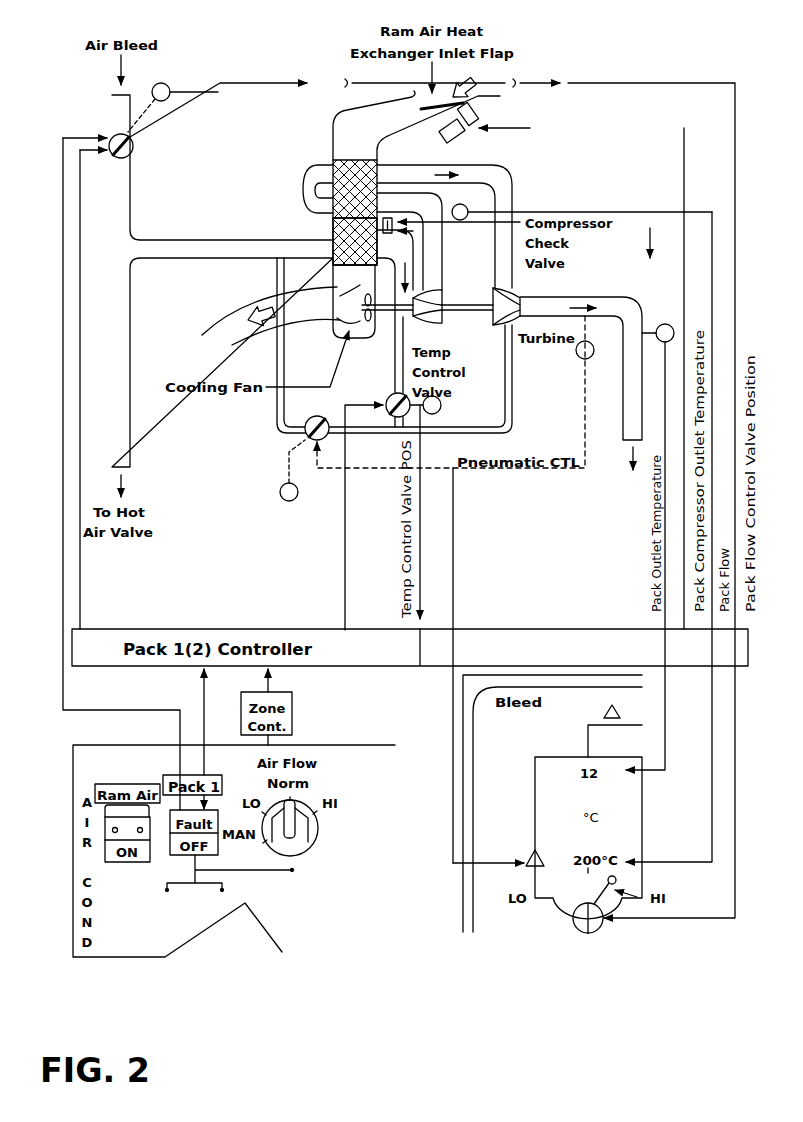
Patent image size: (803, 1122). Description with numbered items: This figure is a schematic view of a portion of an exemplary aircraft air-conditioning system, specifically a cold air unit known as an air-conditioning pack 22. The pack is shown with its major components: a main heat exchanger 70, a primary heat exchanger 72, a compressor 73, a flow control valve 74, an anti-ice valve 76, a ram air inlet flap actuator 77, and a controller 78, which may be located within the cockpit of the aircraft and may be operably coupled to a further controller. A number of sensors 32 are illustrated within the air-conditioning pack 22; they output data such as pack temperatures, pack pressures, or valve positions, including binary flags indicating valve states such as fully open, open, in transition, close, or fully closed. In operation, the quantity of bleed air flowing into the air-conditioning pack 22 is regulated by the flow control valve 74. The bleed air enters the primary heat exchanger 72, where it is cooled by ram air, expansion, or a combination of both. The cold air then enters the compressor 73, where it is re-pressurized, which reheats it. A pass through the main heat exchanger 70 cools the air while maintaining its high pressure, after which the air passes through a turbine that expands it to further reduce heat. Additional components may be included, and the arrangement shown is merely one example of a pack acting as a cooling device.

The air-conditioning pack 22 is at (519, 168).
The sensors 32 is at (170, 85).
The main heat exchanger 70 is at (333, 200).
The primary heat exchanger 72 is at (333, 228).
The compressor 73 is at (430, 324).
The flow control valve 74 is at (121, 158).
The anti-ice valve 76 is at (306, 440).
The ram air inlet flap actuator 77 is at (455, 137).
The controller 78 is at (313, 842).